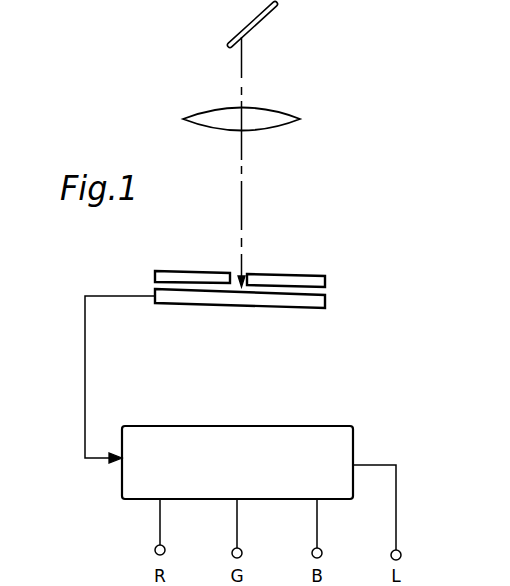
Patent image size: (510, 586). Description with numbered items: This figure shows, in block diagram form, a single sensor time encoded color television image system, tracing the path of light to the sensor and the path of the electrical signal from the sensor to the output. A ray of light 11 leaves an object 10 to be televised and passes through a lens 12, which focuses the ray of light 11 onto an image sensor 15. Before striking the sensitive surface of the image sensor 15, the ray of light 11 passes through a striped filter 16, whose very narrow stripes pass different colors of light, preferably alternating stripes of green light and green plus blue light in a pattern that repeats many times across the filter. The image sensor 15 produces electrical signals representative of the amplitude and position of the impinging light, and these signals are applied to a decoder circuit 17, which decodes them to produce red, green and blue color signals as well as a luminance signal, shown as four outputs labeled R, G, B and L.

The object 10 is at (256, 22).
The ray of light 11 is at (243, 70).
The lens 12 is at (300, 119).
The image sensor 15 is at (325, 300).
The striped filter 16 is at (325, 280).
The decoder circuit 17 is at (278, 438).